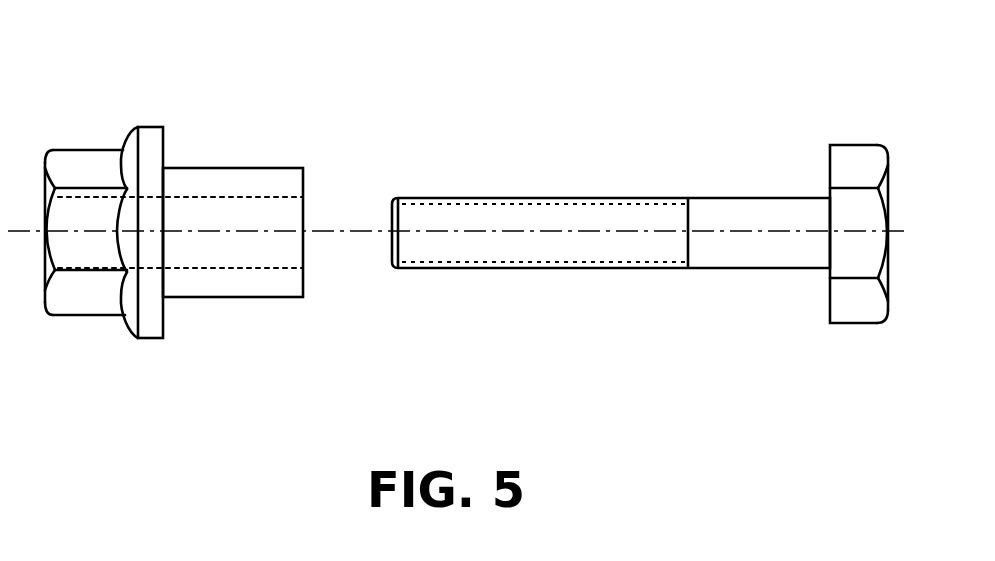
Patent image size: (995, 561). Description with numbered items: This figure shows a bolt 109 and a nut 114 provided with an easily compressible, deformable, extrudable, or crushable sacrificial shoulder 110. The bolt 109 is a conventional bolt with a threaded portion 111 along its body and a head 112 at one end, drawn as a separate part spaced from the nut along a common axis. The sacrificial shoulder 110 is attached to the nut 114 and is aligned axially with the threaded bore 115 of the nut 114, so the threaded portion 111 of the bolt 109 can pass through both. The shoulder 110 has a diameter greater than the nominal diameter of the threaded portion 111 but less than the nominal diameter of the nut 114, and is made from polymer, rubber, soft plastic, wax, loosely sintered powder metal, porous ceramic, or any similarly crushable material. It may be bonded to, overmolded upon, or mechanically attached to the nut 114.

The bolt 109 is at (611, 155).
The sacrificial shoulder 110 is at (230, 167).
The threaded portion 111 is at (557, 197).
The head 112 is at (827, 297).
The nut 114 is at (153, 338).
The threaded bore 115 is at (90, 273).